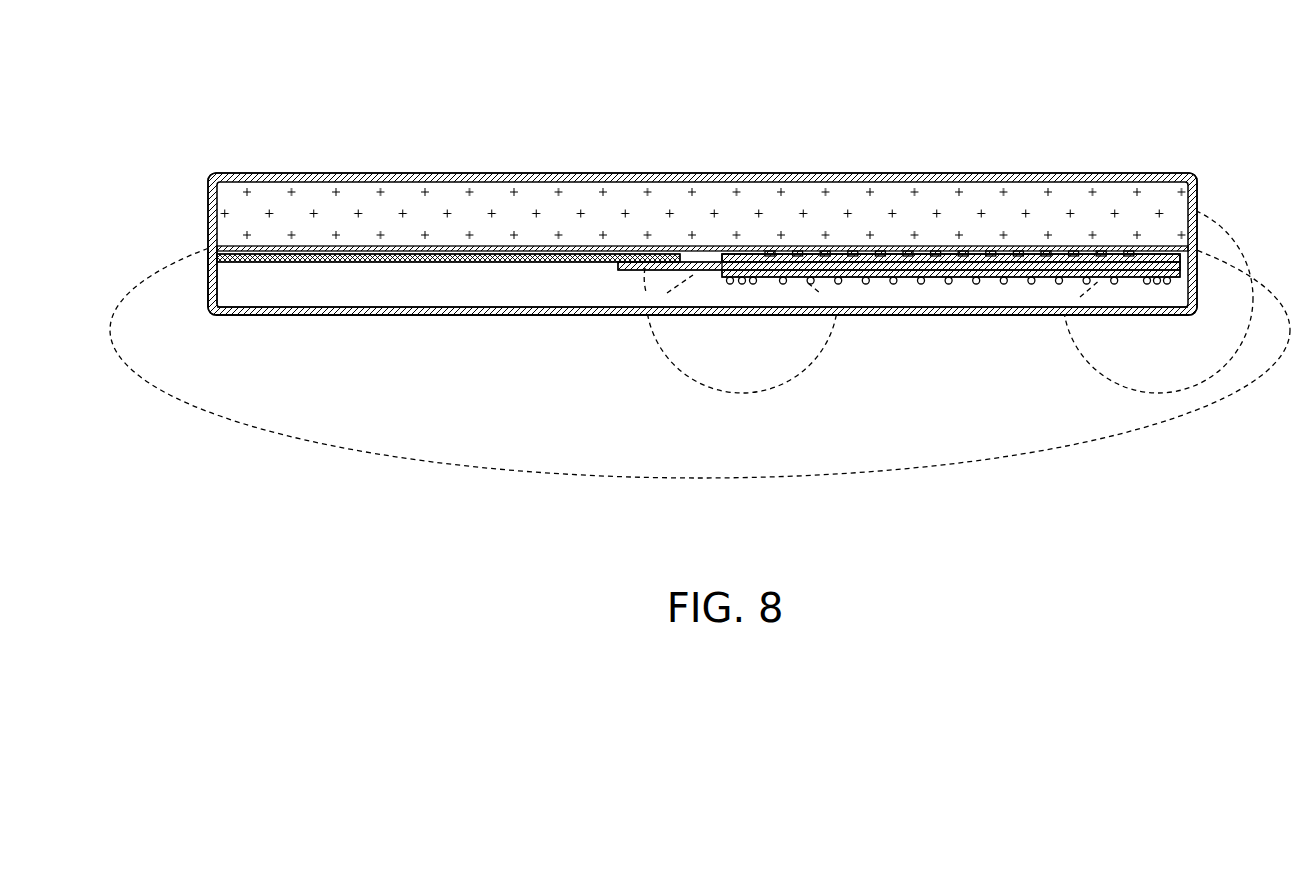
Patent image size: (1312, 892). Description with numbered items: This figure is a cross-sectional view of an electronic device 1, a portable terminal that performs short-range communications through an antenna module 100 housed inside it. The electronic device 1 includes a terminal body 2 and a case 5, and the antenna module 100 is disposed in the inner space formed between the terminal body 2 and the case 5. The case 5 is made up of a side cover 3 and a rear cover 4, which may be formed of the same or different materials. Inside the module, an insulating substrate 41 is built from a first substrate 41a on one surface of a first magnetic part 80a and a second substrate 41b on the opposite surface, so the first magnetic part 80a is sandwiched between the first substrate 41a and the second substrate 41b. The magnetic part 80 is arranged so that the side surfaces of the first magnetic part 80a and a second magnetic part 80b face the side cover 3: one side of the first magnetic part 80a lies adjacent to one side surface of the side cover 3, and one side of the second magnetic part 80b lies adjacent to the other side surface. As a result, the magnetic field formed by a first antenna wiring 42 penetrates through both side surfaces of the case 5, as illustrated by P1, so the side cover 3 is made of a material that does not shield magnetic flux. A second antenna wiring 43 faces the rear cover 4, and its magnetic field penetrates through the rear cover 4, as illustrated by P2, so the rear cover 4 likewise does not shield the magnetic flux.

The electronic device 1 is at (548, 66).
The terminal body 2 is at (202, 203).
The side cover 3 is at (208, 272).
The rear cover 4 is at (257, 312).
The case 5 is at (227, 359).
The insulating substrate 41 is at (973, 114).
The first substrate 41a is at (1030, 257).
The second substrate 41b is at (946, 250).
The first antenna wiring 42 is at (1003, 277).
The second antenna wiring 43 is at (1153, 285).
The magnetic part 80 is at (612, 367).
The first magnetic part 80a is at (647, 272).
The second magnetic part 80b is at (550, 263).
The antenna module 100 is at (886, 296).
The magnetic field of the first antenna wiring P1 is at (893, 473).
The magnetic field of the second antenna wiring P2 is at (742, 394).